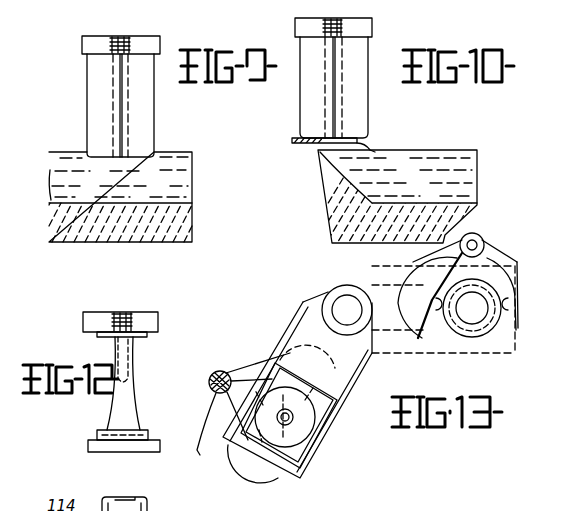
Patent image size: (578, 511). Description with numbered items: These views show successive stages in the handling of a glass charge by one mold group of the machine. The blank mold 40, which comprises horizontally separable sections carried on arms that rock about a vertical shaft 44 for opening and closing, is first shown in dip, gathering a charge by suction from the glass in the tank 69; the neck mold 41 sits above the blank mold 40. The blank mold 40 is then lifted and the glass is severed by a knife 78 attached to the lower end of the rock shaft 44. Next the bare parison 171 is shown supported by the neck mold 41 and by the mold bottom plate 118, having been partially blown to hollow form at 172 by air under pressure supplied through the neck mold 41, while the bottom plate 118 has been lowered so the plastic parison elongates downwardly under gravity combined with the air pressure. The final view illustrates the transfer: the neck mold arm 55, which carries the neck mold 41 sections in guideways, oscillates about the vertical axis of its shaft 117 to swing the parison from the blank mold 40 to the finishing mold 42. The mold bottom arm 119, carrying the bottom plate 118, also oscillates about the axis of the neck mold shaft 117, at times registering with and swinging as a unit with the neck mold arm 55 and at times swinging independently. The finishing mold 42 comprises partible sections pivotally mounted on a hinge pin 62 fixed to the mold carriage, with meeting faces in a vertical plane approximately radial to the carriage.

In FIG. 9, the blank mold 40 is at (88, 86).
In FIG. 10, the blank mold 40 is at (362, 107).
In FIG. 13, the blank mold 40 is at (270, 350).
In FIG. 9, the neck mold 41 is at (82, 43).
In FIG. 10, the neck mold 41 is at (295, 25).
In FIG. 12, the neck mold 41 is at (158, 322).
In FIG. 13, the neck mold 41 is at (326, 447).
In FIG. 13, the finishing mold 42 is at (430, 323).
In FIG. 13, the vertical shaft 44 is at (243, 411).
In FIG. 13, the neck mold arm 55 is at (337, 400).
In FIG. 13, the hinge pin 62 is at (480, 240).
In FIG. 9, the supporting block 69 is at (55, 188).
In FIG. 10, the supporting block 69 is at (330, 190).
In FIG. 10, the knife 78 is at (296, 144).
In FIG. 13, the neck mold shaft 117 is at (342, 300).
In FIG. 12, the mold bottom plate 118 is at (97, 445).
In FIG. 13, the mold bottom plate 118 is at (483, 337).
In FIG. 13, the mold bottom arm 119 is at (395, 330).
In FIG. 12, the bare parison 171 is at (132, 397).
In FIG. 12, the partially expanded parison 172 is at (128, 358).